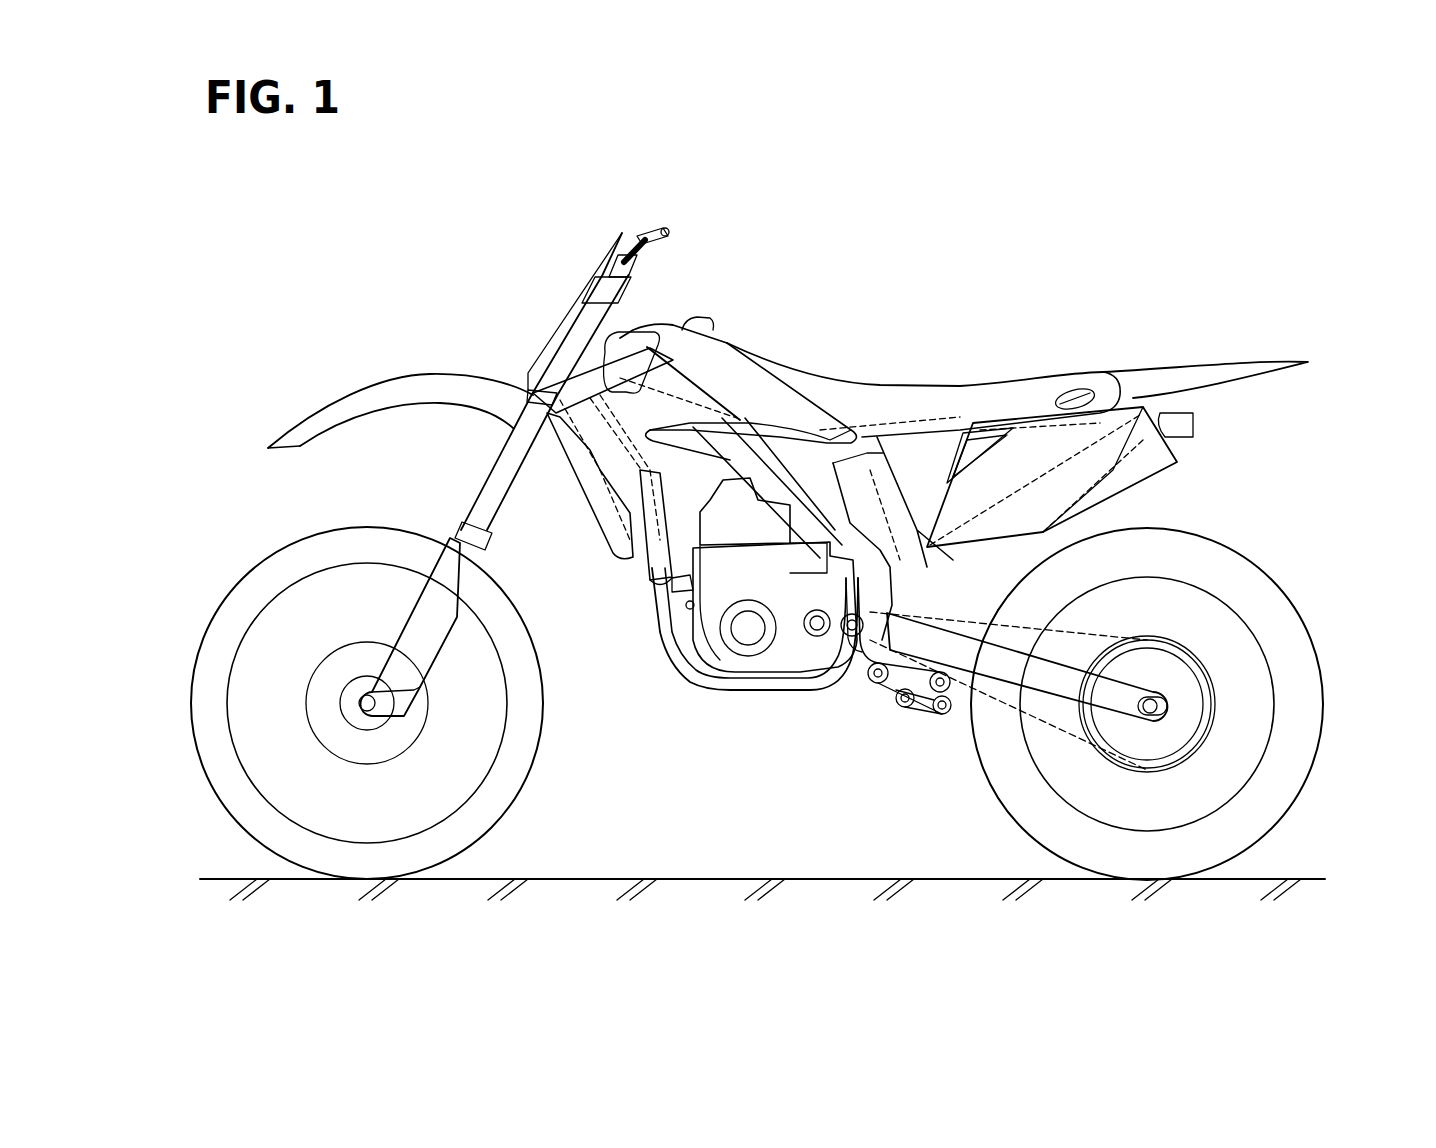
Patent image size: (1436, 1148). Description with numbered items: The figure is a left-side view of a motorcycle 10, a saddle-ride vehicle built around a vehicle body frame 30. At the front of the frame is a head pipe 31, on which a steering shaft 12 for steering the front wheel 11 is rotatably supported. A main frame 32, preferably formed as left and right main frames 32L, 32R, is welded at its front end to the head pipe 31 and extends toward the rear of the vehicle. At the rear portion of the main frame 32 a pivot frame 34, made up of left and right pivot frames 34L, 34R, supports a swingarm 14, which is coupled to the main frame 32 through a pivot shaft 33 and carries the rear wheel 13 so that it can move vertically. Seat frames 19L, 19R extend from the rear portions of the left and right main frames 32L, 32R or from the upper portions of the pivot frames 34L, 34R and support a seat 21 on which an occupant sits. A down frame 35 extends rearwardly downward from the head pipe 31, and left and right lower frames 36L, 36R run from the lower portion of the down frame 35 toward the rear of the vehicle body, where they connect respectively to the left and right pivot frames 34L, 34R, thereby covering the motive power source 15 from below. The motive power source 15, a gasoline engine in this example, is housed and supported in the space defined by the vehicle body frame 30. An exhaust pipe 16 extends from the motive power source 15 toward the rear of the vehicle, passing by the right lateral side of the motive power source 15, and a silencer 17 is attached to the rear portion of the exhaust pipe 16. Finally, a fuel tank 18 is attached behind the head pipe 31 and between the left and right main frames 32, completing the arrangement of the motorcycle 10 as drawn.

The motorcycle 10 is at (1027, 220).
The front wheel 11 is at (265, 584).
The steering shaft 12 is at (590, 316).
The rear wheel 13 is at (1318, 705).
The swingarm 14 is at (1003, 672).
The motive power source 15 is at (707, 650).
The exhaust pipe 16 is at (673, 582).
The silencer 17 is at (1133, 478).
The fuel tank 18 is at (720, 350).
The left seat frame 19L is at (953, 420).
The right seat frame 19R is at (1011, 393).
The seat 21 is at (873, 405).
The vehicle body frame 30 is at (655, 632).
The head pipe 31 is at (585, 365).
The main frame 32 is at (760, 440).
The left main frame 32L is at (739, 411).
The right main frame 32R is at (739, 411).
The pivot shaft 33 is at (847, 647).
The pivot frame 34 is at (857, 675).
The left pivot frame 34L is at (892, 701).
The right pivot frame 34R is at (892, 701).
The down frame 35 is at (655, 558).
The left lower frame 36L is at (743, 683).
The right lower frame 36R is at (755, 682).